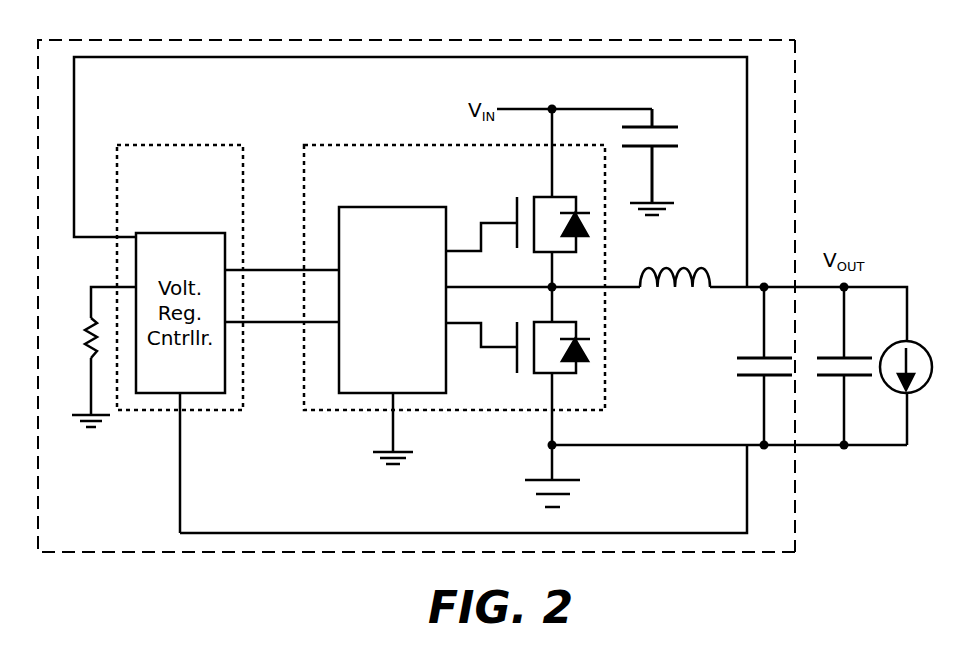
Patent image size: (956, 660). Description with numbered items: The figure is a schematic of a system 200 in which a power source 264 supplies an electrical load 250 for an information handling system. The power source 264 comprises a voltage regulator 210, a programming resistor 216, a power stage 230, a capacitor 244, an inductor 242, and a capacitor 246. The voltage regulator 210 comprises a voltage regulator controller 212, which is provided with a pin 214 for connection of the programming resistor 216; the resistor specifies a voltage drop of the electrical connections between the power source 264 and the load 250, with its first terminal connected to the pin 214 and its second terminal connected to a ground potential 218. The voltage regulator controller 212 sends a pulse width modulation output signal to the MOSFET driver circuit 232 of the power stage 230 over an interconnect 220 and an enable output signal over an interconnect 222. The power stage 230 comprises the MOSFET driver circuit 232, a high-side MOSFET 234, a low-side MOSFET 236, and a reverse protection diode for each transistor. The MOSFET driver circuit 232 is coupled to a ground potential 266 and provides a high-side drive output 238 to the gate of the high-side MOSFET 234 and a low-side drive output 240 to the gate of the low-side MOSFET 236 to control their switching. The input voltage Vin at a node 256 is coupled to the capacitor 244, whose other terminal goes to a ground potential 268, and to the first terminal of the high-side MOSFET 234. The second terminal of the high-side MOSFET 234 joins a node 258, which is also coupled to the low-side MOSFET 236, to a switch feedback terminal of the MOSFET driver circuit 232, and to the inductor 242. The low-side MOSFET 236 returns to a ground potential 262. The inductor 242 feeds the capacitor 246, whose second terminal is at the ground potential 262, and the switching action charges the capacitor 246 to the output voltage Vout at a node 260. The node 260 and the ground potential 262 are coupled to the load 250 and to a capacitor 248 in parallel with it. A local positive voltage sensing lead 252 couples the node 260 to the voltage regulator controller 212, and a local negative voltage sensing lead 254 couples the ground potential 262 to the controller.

The system 200 is at (126, 22).
The voltage regulator 210 is at (178, 145).
The voltage regulator controller 212 is at (197, 394).
The pin 214 is at (100, 284).
The programming resistor 216 is at (86, 325).
The ground potential 218 is at (86, 413).
The interconnect 220 is at (290, 268).
The interconnect 222 is at (283, 324).
The power stage 230 is at (340, 145).
The MOSFET driver circuit 232 is at (356, 207).
The high-side MOSFET 234 is at (517, 201).
The low-side MOSFET 236 is at (517, 370).
The high-side drive output 238 is at (482, 238).
The low-side drive output 240 is at (482, 336).
The inductor 242 is at (660, 267).
The capacitor 244 is at (658, 127).
The capacitor 246 is at (747, 357).
The capacitor 248 is at (835, 357).
The load 250 is at (888, 346).
The local positive voltage sensing lead 252 is at (240, 58).
The local negative voltage sensing lead 254 is at (302, 533).
The node 256 is at (606, 109).
The node 258 is at (626, 289).
The node 260 is at (724, 285).
The ground potential 262 is at (640, 447).
The power source 264 is at (795, 58).
The ground potential 266 is at (390, 465).
The ground potential 268 is at (668, 203).